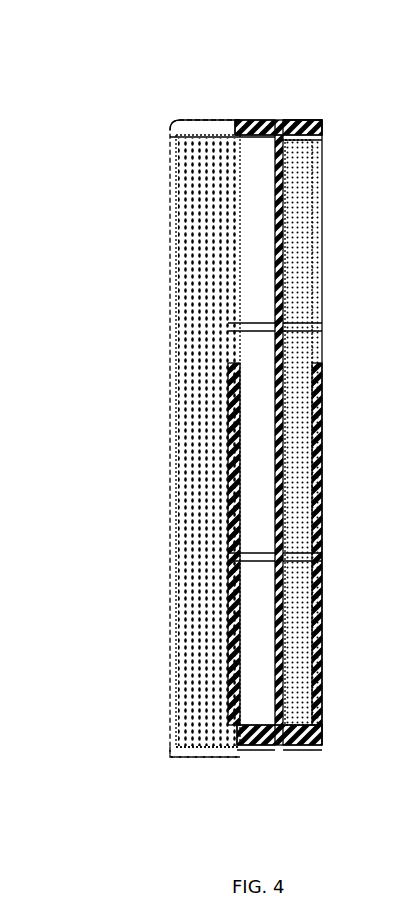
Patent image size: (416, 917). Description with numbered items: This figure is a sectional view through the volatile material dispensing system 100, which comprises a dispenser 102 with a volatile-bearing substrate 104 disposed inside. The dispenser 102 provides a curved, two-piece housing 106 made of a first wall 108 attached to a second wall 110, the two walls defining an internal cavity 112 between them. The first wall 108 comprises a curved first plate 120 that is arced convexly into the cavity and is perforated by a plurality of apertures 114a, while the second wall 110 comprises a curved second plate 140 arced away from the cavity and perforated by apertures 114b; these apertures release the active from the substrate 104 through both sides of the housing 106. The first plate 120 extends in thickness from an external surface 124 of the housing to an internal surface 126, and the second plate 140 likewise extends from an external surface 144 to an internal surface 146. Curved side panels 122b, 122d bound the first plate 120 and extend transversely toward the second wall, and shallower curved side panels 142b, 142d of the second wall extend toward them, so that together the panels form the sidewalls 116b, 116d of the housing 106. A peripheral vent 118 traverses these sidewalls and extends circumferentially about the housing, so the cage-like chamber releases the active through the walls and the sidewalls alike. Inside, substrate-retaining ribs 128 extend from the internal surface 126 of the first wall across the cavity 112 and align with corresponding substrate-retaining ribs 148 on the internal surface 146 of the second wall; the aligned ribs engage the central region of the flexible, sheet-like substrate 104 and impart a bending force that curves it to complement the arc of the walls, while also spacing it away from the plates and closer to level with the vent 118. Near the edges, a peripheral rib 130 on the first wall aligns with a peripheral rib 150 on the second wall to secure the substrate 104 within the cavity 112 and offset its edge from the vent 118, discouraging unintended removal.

The volatile material dispensing system 100 is at (74, 184).
The dispenser 102 is at (82, 251).
The volatile-bearing substrate 104 is at (282, 262).
The housing 106 is at (343, 125).
The first wall 108 is at (208, 120).
The second wall 110 is at (305, 127).
The internal cavity 112 is at (258, 402).
The aperture 114a is at (208, 238).
The aperture 114b is at (290, 234).
The sidewall 116b is at (186, 114).
The sidewall 116d is at (190, 758).
The peripheral vent 118 is at (288, 125).
The curved first plate 120 is at (180, 728).
The side panel 122b is at (247, 127).
The side panel 122d is at (252, 756).
The external surface 124 is at (232, 710).
The internal surface 126 is at (240, 683).
The substrate-retaining rib 128 is at (268, 328).
The peripheral rib 130 is at (238, 140).
The curved second plate 140 is at (320, 728).
The side panel 142b is at (300, 130).
The side panel 142d is at (298, 756).
The external surface 144 is at (320, 722).
The internal surface 146 is at (305, 678).
The substrate-retaining rib 148 is at (300, 330).
The peripheral rib 150 is at (303, 147).